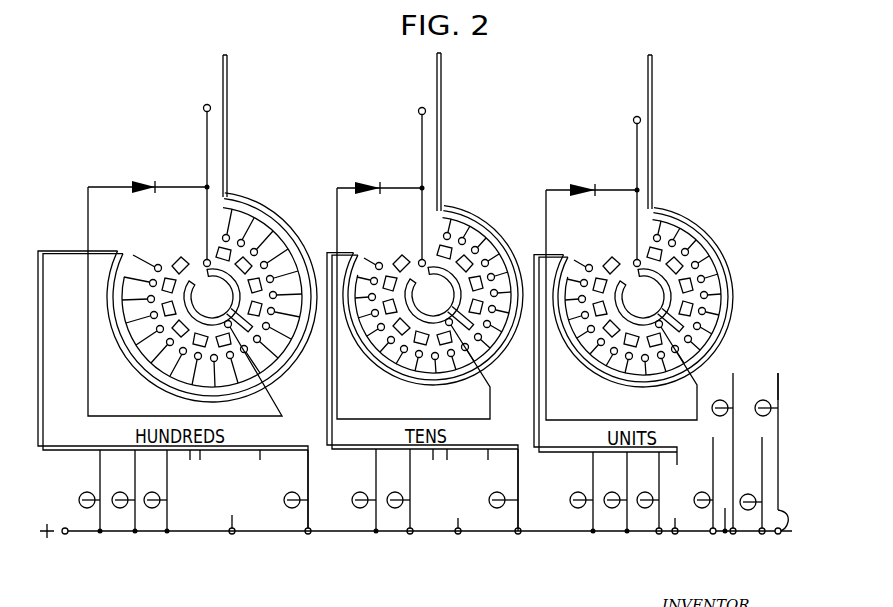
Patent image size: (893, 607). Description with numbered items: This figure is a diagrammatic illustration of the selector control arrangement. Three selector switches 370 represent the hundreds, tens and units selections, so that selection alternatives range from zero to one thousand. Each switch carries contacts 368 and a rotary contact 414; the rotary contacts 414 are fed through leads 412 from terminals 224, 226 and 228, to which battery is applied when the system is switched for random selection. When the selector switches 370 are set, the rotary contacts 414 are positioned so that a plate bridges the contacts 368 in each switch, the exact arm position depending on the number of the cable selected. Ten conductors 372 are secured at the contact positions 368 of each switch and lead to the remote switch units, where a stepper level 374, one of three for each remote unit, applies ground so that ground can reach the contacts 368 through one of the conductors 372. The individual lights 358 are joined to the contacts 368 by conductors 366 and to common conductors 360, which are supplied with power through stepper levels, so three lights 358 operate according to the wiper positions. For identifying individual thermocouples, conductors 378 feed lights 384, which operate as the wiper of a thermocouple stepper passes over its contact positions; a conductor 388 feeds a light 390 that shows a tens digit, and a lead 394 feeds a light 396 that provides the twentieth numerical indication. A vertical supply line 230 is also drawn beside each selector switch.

The terminal 224 is at (205, 108).
The terminal 226 is at (421, 108).
The terminal 228 is at (636, 117).
The supply conductor 230 is at (226, 97).
The leads 412 is at (207, 110).
The selector switches 370 is at (75, 228).
The conductors 372 is at (231, 210).
The conductors 366 is at (145, 252).
The contacts 368 is at (162, 268).
The rotary contacts 414 is at (427, 296).
The lights 358 is at (80, 500).
The common conductors 360 is at (240, 533).
The stepper level 374 is at (701, 491).
The conductors 378 is at (723, 532).
The lights 384 is at (716, 395).
The conductor 388 is at (784, 532).
The light 390 is at (751, 511).
The lead 394 is at (780, 378).
The light 396 is at (761, 395).